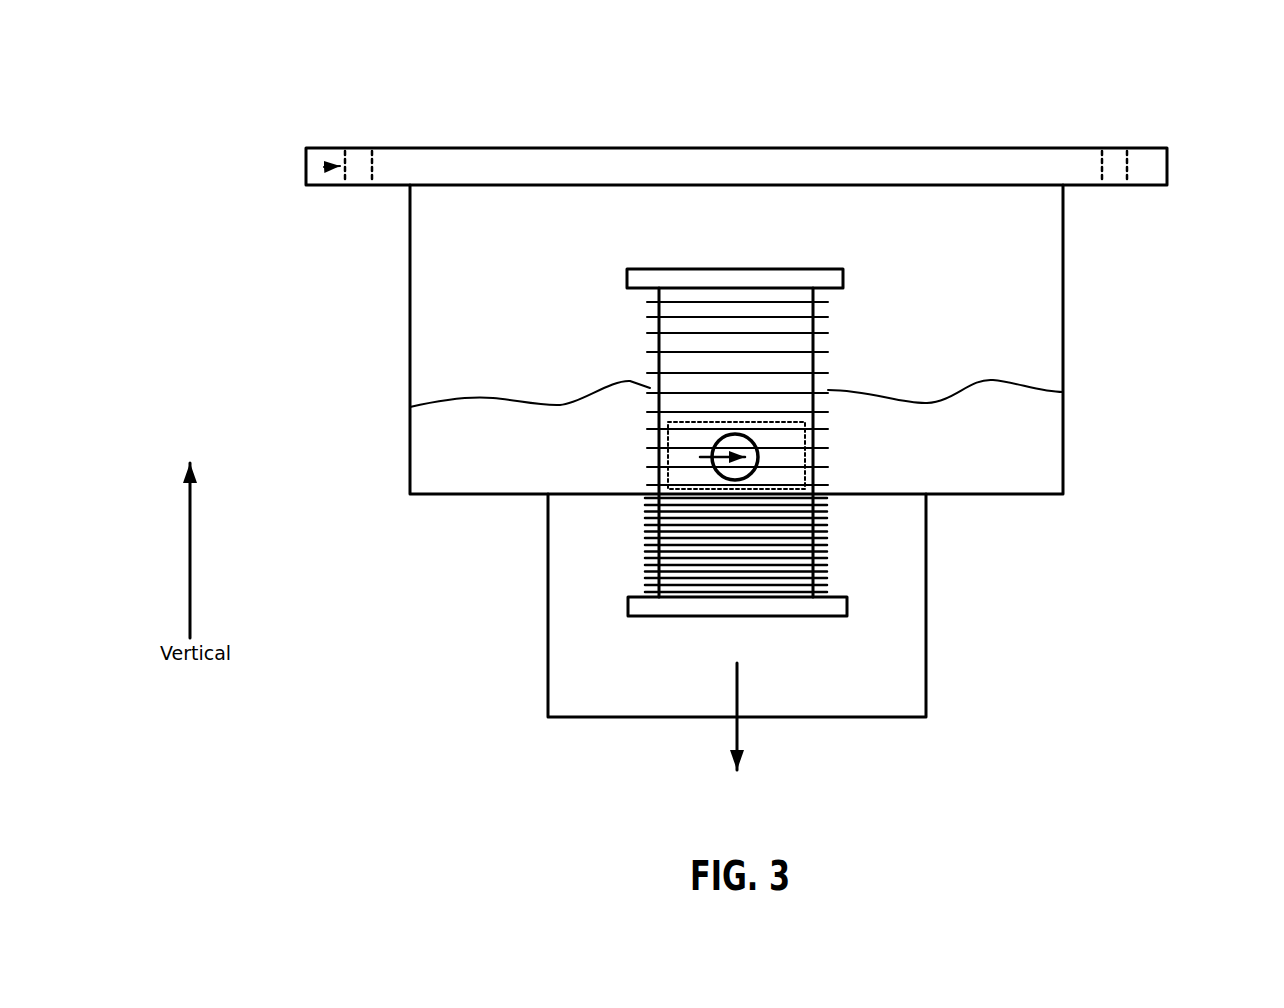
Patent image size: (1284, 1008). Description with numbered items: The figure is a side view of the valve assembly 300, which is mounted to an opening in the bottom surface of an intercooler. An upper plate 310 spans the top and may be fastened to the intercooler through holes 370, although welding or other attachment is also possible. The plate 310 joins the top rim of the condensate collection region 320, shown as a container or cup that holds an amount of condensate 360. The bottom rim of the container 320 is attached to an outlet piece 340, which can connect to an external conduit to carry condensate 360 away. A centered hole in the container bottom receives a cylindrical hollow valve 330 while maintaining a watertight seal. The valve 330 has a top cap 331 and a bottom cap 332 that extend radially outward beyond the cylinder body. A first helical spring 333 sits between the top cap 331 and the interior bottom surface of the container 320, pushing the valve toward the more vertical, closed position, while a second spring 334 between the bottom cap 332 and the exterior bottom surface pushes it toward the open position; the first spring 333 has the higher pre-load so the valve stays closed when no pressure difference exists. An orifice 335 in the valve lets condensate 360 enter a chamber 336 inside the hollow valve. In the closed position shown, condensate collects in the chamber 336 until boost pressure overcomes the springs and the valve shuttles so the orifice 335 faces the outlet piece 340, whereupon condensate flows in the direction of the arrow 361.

The valve assembly 300 is at (1152, 110).
The upper plate 310 is at (522, 147).
The condensate collection region 320 is at (1068, 245).
The hollow valve 330 is at (724, 435).
The top cap 331 is at (805, 272).
The bottom cap 332 is at (719, 610).
The first helical spring 333 is at (648, 327).
The second spring 334 is at (827, 552).
The orifice 335 is at (700, 457).
The chamber 336 is at (788, 460).
The outlet piece 340 is at (530, 579).
The condensate 360 is at (1030, 423).
The arrow 361 is at (738, 731).
The holes 370 is at (324, 167).